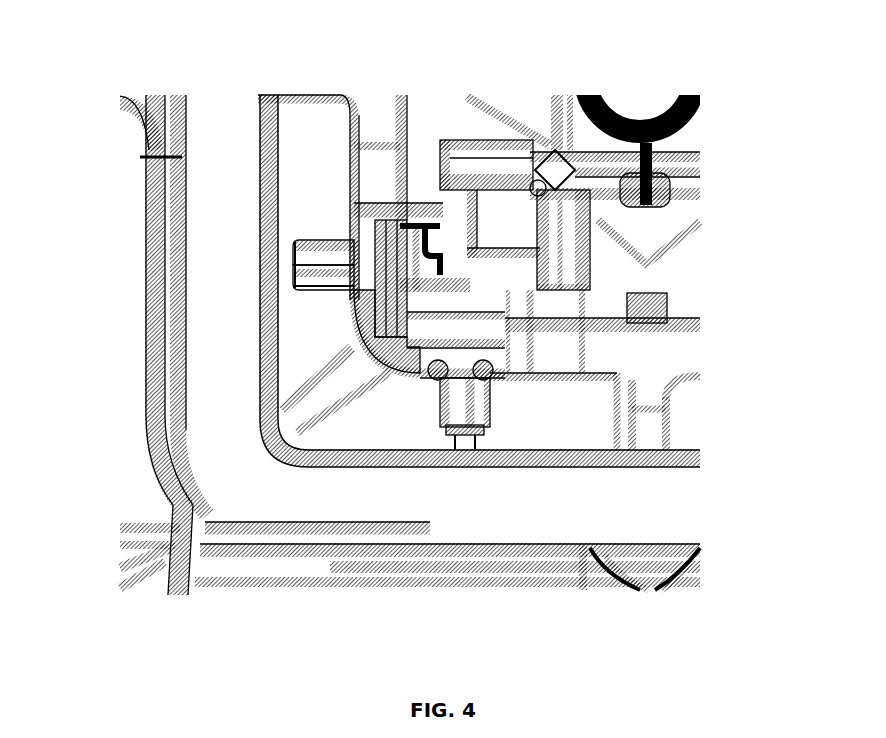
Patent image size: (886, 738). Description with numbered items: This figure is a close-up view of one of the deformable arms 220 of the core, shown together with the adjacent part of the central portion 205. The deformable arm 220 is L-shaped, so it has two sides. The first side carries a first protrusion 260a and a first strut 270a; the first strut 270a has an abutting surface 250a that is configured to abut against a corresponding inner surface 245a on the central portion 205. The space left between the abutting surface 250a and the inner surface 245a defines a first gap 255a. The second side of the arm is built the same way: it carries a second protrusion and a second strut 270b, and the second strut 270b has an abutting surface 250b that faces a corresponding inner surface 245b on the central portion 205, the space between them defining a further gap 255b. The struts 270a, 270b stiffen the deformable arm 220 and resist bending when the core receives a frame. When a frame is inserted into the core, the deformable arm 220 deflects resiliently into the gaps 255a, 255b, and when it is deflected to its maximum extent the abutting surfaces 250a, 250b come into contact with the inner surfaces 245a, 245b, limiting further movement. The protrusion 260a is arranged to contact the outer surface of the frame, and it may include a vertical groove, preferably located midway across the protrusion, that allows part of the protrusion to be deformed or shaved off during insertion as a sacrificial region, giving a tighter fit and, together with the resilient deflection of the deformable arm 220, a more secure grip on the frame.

The central portion 205 is at (645, 515).
The deformable arm 220 is at (373, 352).
The inner surface 245a is at (465, 445).
The inner surface 245b is at (293, 252).
The abutting surface 250a is at (450, 433).
The abutting surface 250b is at (300, 268).
The first gap 255a is at (476, 433).
The gap 255b is at (288, 240).
The first protrusion 260a is at (440, 212).
The first strut 270a is at (490, 393).
The second strut 270b is at (322, 235).